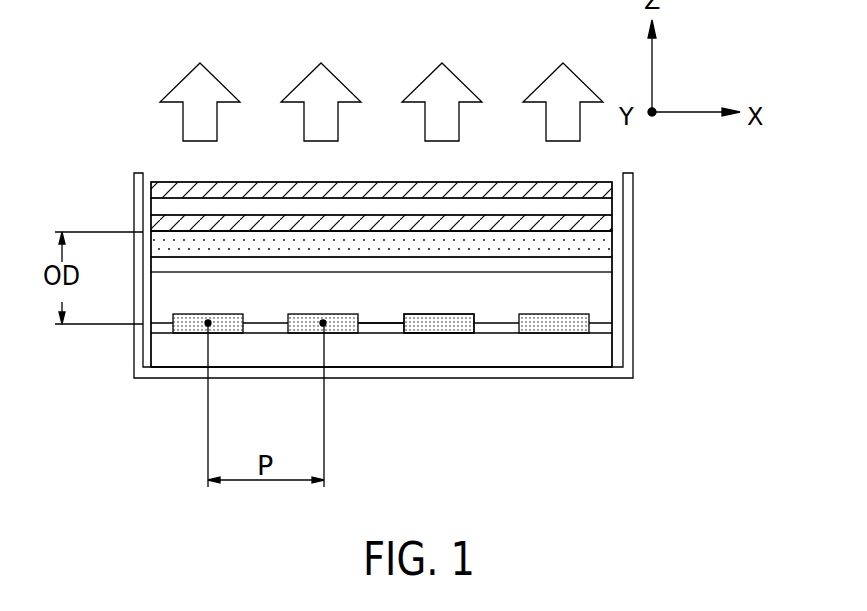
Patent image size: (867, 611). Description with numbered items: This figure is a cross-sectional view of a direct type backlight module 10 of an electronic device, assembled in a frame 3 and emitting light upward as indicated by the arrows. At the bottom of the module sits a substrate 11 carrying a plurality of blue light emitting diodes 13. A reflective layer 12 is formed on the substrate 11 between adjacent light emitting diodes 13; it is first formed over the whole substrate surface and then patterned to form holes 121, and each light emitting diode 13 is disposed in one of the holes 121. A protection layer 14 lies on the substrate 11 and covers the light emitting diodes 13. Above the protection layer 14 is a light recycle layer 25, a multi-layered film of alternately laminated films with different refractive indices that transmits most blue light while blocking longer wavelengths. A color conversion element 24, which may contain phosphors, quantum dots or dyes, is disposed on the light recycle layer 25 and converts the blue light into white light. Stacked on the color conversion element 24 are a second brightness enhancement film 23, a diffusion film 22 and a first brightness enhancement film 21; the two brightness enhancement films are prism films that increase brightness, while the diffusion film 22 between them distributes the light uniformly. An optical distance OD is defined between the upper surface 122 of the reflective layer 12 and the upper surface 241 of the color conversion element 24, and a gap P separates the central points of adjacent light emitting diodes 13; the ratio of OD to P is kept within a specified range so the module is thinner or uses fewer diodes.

The backlight module 10 is at (703, 145).
The substrate 11 is at (612, 350).
The reflective layer 12 is at (612, 325).
The holes 121 is at (475, 332).
The upper surface of the reflective layer 122 is at (368, 323).
The light emitting diodes 13 is at (557, 330).
The protection layer 14 is at (612, 295).
The first brightness enhancement film 21 is at (612, 190).
The diffusion film 22 is at (612, 207).
The second brightness enhancement film 23 is at (612, 223).
The color conversion element 24 is at (612, 244).
The upper surface of the color conversion element 241 is at (177, 232).
The light recycle layer 25 is at (612, 265).
The frame 3 is at (137, 361).